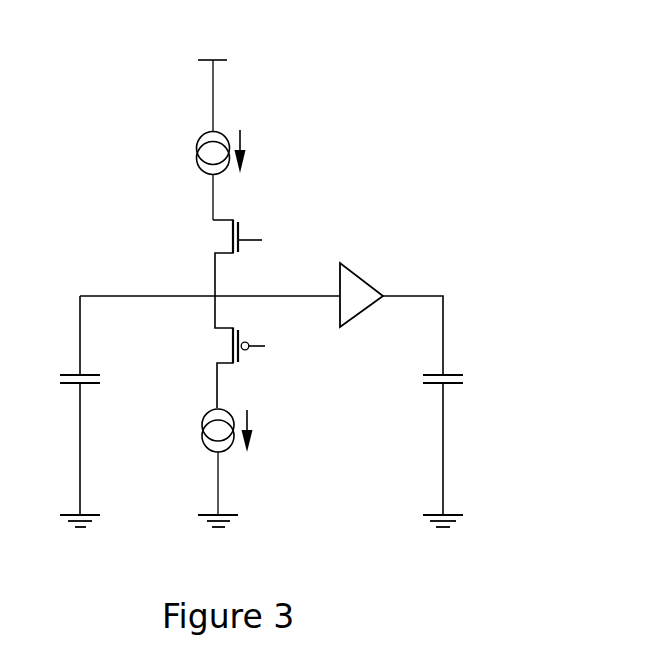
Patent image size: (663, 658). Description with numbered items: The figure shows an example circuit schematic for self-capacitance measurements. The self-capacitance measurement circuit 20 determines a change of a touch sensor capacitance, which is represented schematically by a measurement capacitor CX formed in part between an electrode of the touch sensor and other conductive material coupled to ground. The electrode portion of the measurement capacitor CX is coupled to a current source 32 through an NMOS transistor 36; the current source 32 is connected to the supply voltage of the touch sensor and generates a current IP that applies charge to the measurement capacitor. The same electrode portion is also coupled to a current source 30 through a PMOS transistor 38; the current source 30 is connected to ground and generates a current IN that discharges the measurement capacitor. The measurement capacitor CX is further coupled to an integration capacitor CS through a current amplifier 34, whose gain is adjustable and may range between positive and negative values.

The self-capacitance measurement circuit 20 is at (308, 88).
The current source 30 is at (190, 441).
The current source 32 is at (186, 160).
The current amplifier 34 is at (364, 264).
The NMOS transistor 36 is at (203, 243).
The PMOS transistor 38 is at (203, 348).